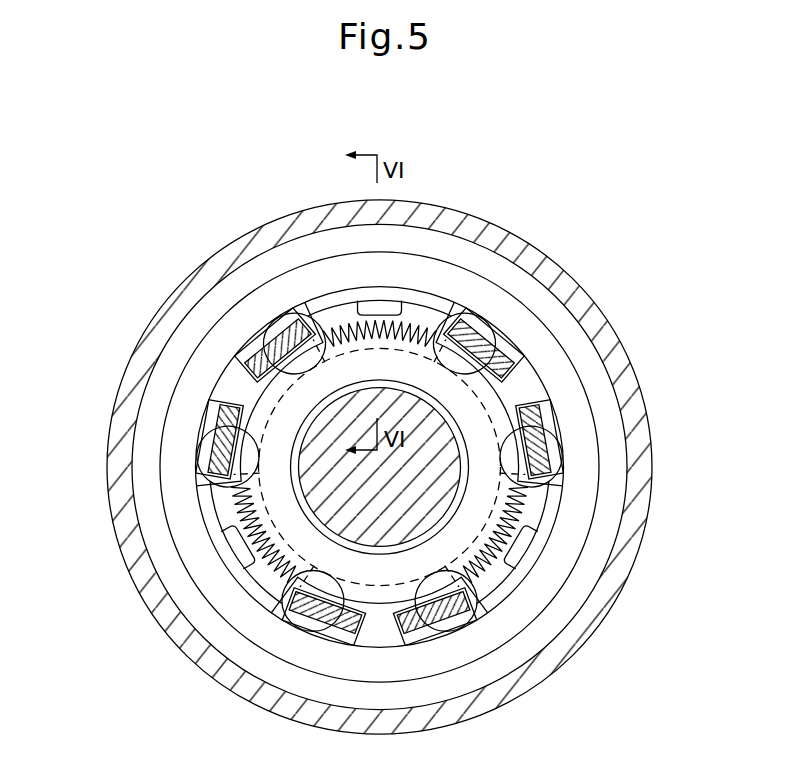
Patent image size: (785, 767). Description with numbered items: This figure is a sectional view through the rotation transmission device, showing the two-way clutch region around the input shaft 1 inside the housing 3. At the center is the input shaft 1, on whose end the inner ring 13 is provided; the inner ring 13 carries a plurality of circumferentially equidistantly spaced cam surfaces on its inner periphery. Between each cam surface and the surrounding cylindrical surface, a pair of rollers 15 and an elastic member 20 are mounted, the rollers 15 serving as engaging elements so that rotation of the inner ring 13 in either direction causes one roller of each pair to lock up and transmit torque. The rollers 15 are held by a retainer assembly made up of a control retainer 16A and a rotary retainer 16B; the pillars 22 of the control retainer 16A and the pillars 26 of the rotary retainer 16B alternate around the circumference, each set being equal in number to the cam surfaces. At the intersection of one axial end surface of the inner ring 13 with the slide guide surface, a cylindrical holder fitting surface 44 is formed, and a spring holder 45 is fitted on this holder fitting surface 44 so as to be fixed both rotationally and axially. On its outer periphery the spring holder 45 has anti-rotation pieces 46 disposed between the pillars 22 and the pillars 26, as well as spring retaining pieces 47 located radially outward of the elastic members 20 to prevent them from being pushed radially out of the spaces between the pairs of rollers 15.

The input shaft 1 is at (312, 458).
The housing 3 is at (162, 320).
The inner ring 13 is at (235, 378).
The rollers 15 is at (480, 328).
The control retainer 16A is at (241, 349).
The rotary retainer 16B is at (523, 357).
The elastic member 20 is at (448, 305).
The pillars 22 is at (268, 358).
The pillars 26 is at (540, 322).
The holder fitting surface 44 is at (278, 520).
The spring holder 45 is at (602, 332).
The anti-rotation pieces 46 is at (345, 300).
The spring retaining pieces 47 is at (385, 318).